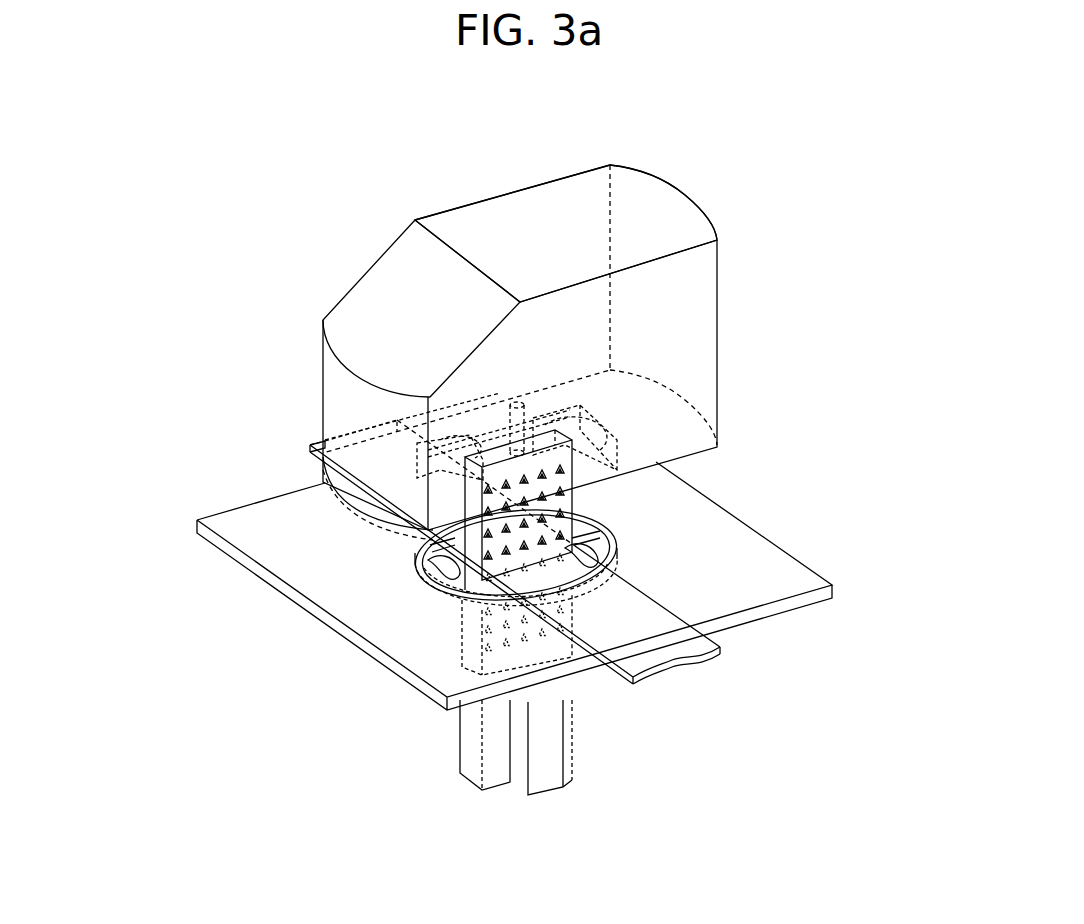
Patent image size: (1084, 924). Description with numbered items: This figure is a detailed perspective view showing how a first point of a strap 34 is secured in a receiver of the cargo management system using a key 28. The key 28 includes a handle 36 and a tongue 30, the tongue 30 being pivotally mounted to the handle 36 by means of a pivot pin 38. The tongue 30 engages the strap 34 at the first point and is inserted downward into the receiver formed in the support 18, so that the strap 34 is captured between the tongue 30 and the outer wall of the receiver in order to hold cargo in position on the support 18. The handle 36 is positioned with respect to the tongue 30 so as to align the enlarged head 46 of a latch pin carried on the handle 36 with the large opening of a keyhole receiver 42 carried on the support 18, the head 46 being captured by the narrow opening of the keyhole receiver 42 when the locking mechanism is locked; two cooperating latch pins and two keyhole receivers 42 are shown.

The support 18 is at (767, 557).
The key 28 is at (731, 192).
The tongue 30 is at (585, 503).
The strap 34 is at (673, 648).
The handle 36 is at (513, 193).
The pivot pin 38 is at (507, 420).
The keyhole receiver 42 is at (433, 568).
The enlarged head 46 is at (427, 530).